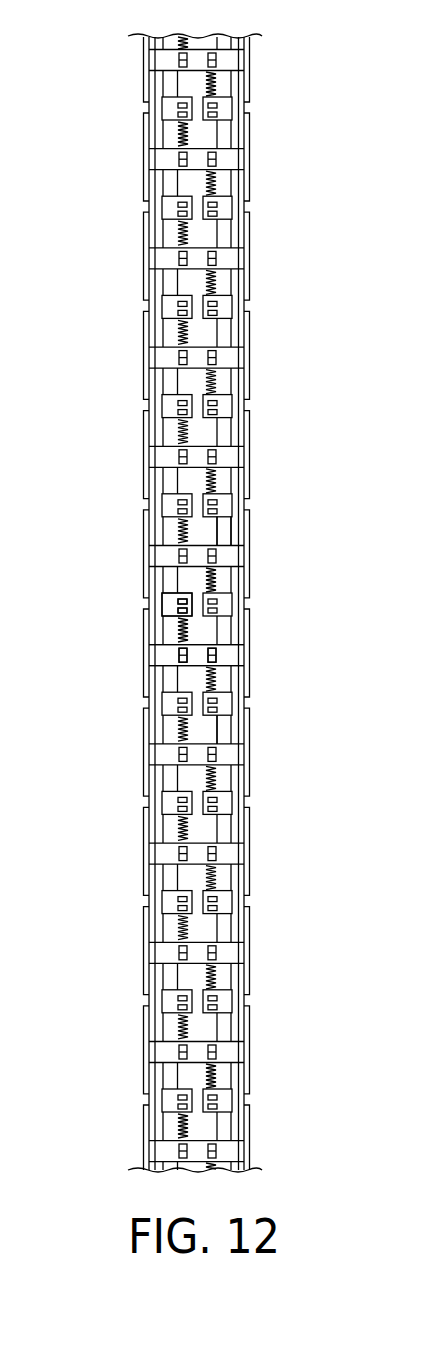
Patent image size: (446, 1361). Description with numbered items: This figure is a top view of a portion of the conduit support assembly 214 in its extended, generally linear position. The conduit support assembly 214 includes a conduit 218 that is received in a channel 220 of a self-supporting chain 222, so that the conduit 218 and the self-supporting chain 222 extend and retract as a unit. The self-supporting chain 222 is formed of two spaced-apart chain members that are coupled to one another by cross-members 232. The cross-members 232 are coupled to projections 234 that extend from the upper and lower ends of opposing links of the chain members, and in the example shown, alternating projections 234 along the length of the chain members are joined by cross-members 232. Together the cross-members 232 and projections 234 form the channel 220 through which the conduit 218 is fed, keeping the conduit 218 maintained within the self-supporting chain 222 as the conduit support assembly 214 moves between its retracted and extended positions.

The conduit support assembly 214 is at (106, 448).
The conduit 218 is at (220, 727).
The channel 220 is at (226, 535).
The self-supporting chain 222 is at (140, 657).
The cross-members 232 is at (197, 655).
The projections 234 is at (172, 605).